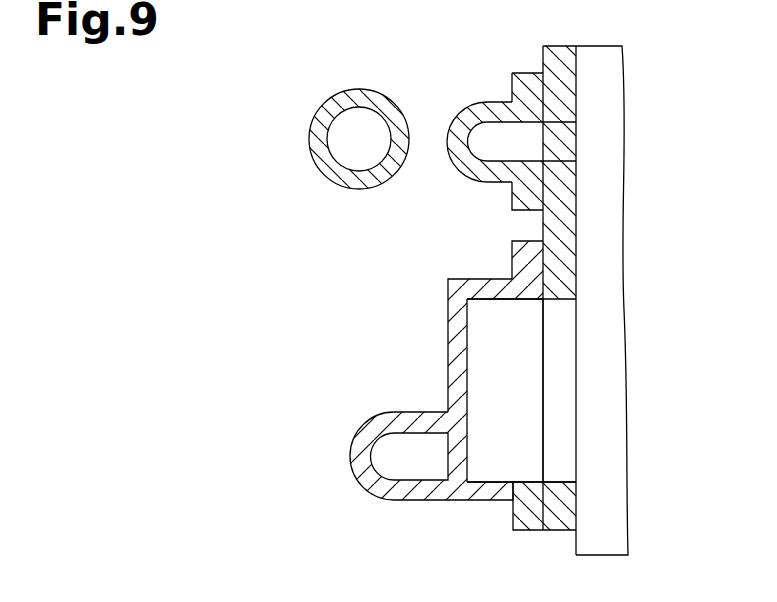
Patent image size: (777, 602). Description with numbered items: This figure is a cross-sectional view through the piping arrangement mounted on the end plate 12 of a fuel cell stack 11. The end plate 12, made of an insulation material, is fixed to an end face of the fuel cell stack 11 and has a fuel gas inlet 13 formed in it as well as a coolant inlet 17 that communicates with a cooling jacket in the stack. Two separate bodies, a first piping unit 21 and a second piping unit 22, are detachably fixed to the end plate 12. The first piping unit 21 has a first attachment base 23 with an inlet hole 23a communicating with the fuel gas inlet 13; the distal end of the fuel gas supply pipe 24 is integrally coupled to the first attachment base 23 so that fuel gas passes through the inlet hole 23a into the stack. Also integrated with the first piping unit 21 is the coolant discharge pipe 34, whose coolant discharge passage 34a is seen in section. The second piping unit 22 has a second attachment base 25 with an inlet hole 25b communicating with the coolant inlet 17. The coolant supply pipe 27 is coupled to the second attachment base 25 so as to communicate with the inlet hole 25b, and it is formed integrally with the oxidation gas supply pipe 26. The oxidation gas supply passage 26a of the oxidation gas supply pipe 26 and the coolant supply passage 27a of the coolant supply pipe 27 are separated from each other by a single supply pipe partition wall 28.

The fuel cell stack 11 is at (600, 87).
The end plate 12 is at (568, 59).
The fuel gas inlet 13 is at (578, 133).
The coolant inlet 17 is at (577, 313).
The first piping unit 21 is at (324, 114).
The second piping unit 22 is at (484, 411).
The first attachment base 23 is at (520, 73).
The inlet hole 23a is at (545, 152).
The fuel gas supply pipe 24 is at (456, 113).
The second attachment base 25 is at (535, 512).
The inlet hole 25b is at (545, 470).
The oxidation gas supply pipe 26 is at (352, 462).
The oxidation gas supply passage 26a is at (384, 463).
The coolant supply pipe 27 is at (448, 342).
The coolant supply passage 27a is at (505, 390).
The supply pipe partition wall 28 is at (442, 462).
The coolant discharge pipe 34 is at (398, 108).
The coolant discharge passage 34a is at (359, 139).